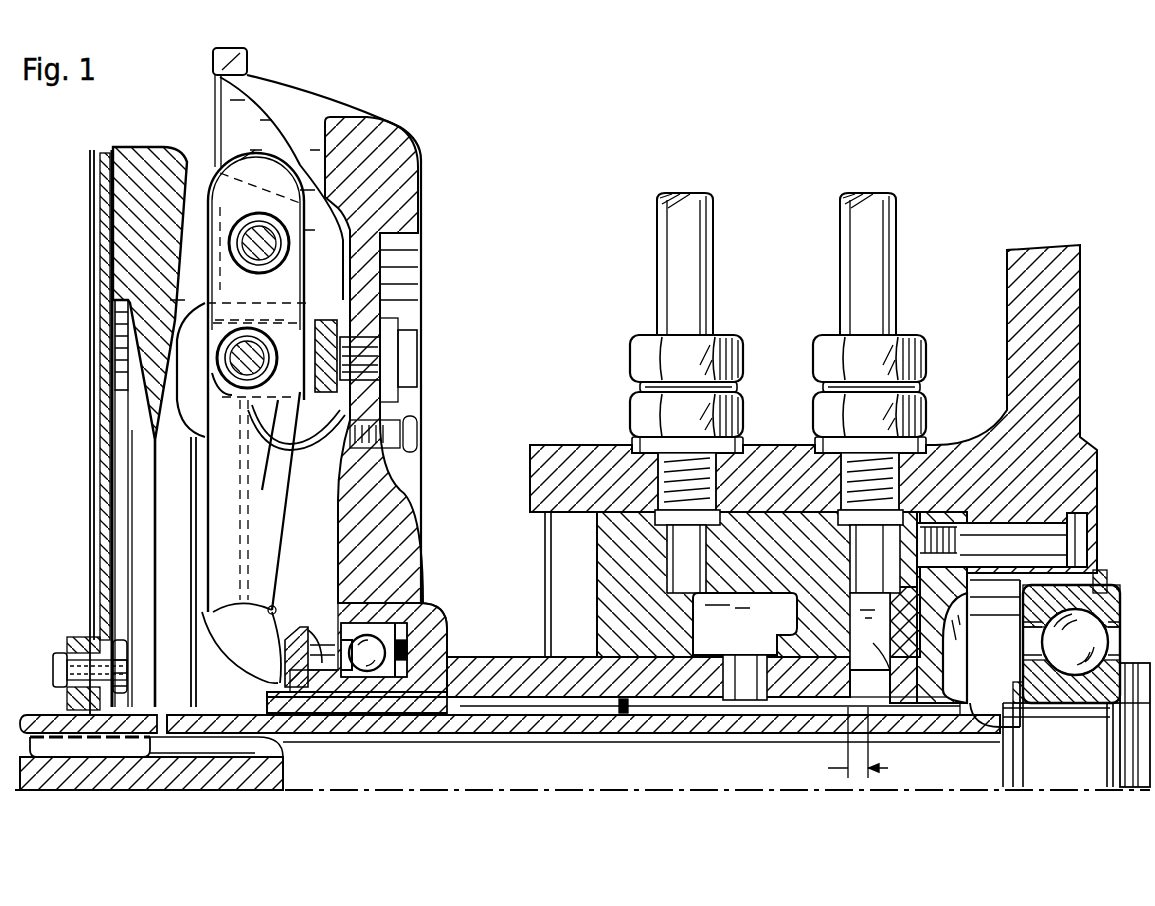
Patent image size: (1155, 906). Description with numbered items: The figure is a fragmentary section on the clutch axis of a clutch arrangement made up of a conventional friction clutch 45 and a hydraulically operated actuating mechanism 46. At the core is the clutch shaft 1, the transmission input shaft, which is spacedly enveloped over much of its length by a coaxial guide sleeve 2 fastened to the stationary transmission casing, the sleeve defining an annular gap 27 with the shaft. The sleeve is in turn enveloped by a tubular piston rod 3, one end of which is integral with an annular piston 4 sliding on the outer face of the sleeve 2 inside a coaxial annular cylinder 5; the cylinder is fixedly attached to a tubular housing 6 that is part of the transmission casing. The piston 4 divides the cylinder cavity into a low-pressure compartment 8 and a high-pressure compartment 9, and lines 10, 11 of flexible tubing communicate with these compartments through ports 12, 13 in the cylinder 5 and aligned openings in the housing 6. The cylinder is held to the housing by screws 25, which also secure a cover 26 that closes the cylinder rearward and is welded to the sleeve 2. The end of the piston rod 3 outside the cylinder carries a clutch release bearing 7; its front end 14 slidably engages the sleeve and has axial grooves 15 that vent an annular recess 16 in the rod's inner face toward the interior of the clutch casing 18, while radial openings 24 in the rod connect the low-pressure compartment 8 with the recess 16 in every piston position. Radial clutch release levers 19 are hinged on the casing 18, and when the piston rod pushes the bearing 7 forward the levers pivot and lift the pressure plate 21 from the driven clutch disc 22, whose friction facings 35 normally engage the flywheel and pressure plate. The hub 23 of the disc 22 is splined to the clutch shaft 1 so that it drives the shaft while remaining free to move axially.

The clutch shaft 1 is at (192, 778).
The guide sleeve 2 is at (218, 714).
The piston rod 3 is at (595, 683).
The annular piston 4 is at (815, 677).
The annular cylinder 5 is at (637, 600).
The tubular housing 6 is at (577, 456).
The clutch release bearing 7 is at (446, 604).
The low-pressure compartment 8 is at (722, 625).
The high-pressure compartment 9 is at (905, 730).
The line 10 is at (700, 210).
The line 11 is at (888, 210).
The port 12 is at (680, 547).
The port 13 is at (856, 562).
The front end 14 is at (311, 700).
The axial grooves 15 is at (377, 700).
The annular recess 16 is at (531, 734).
The clutch casing 18 is at (392, 192).
The clutch release levers 19 is at (243, 640).
The pressure plate 21 is at (150, 187).
The driven clutch disc 22 is at (100, 238).
The hub 23 is at (50, 724).
The radial openings 24 is at (742, 680).
The screws 25 is at (1000, 538).
The cover 26 is at (953, 735).
The annular gap 27 is at (494, 735).
The friction facings 35 is at (90, 278).
The friction clutch 45 is at (100, 146).
The hydraulically operated actuating mechanism 46 is at (622, 714).